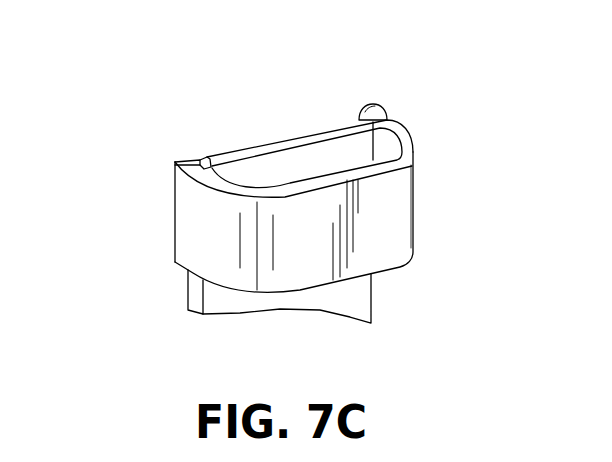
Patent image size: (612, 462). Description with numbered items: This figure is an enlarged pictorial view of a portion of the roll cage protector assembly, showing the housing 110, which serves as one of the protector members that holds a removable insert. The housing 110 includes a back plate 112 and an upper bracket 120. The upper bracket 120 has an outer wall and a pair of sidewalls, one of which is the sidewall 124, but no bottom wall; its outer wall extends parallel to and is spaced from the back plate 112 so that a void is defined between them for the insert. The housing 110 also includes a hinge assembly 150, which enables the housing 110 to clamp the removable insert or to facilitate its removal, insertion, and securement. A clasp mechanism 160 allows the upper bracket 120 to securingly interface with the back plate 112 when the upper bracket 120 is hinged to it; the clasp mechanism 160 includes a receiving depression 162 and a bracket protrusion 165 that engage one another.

The housing 110 is at (266, 194).
The back plate 112 is at (362, 292).
The upper bracket 120 is at (265, 222).
The sidewall 124 is at (207, 218).
The hinge assembly 150 is at (392, 102).
The clasp mechanism 160 is at (312, 122).
The receiving depression 162 is at (206, 157).
The bracket protrusion 165 is at (195, 158).